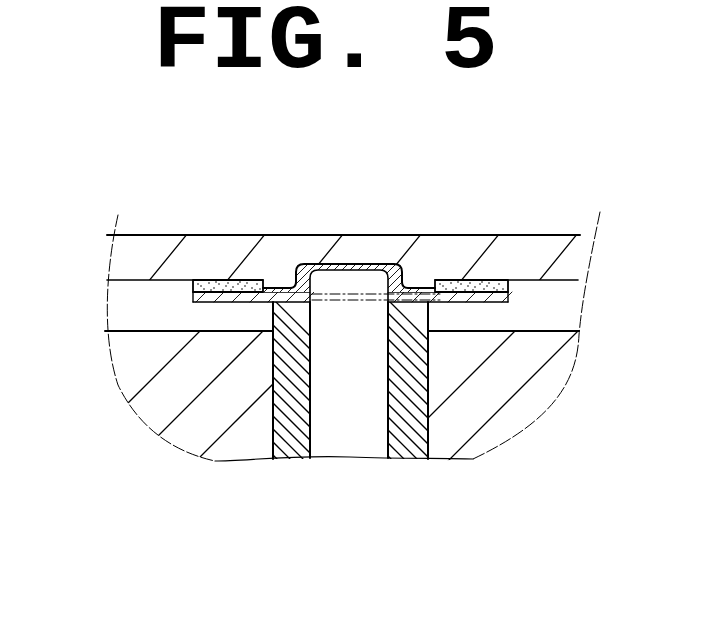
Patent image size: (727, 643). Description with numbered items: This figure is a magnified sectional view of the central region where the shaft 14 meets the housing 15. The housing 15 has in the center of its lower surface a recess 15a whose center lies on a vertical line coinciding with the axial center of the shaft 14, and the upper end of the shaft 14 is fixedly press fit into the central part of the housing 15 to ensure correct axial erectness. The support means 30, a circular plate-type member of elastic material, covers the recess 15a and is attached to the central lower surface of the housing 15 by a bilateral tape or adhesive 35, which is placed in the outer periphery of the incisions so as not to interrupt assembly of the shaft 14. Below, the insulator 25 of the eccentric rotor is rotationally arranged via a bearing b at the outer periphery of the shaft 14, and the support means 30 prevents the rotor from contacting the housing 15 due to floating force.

The housing 15 is at (524, 243).
The recess 15a is at (296, 276).
The adhesive 35 is at (478, 282).
The support means 30 is at (193, 300).
The insulator 25 is at (493, 395).
The shaft 14 is at (350, 444).
The bearing b is at (277, 418).